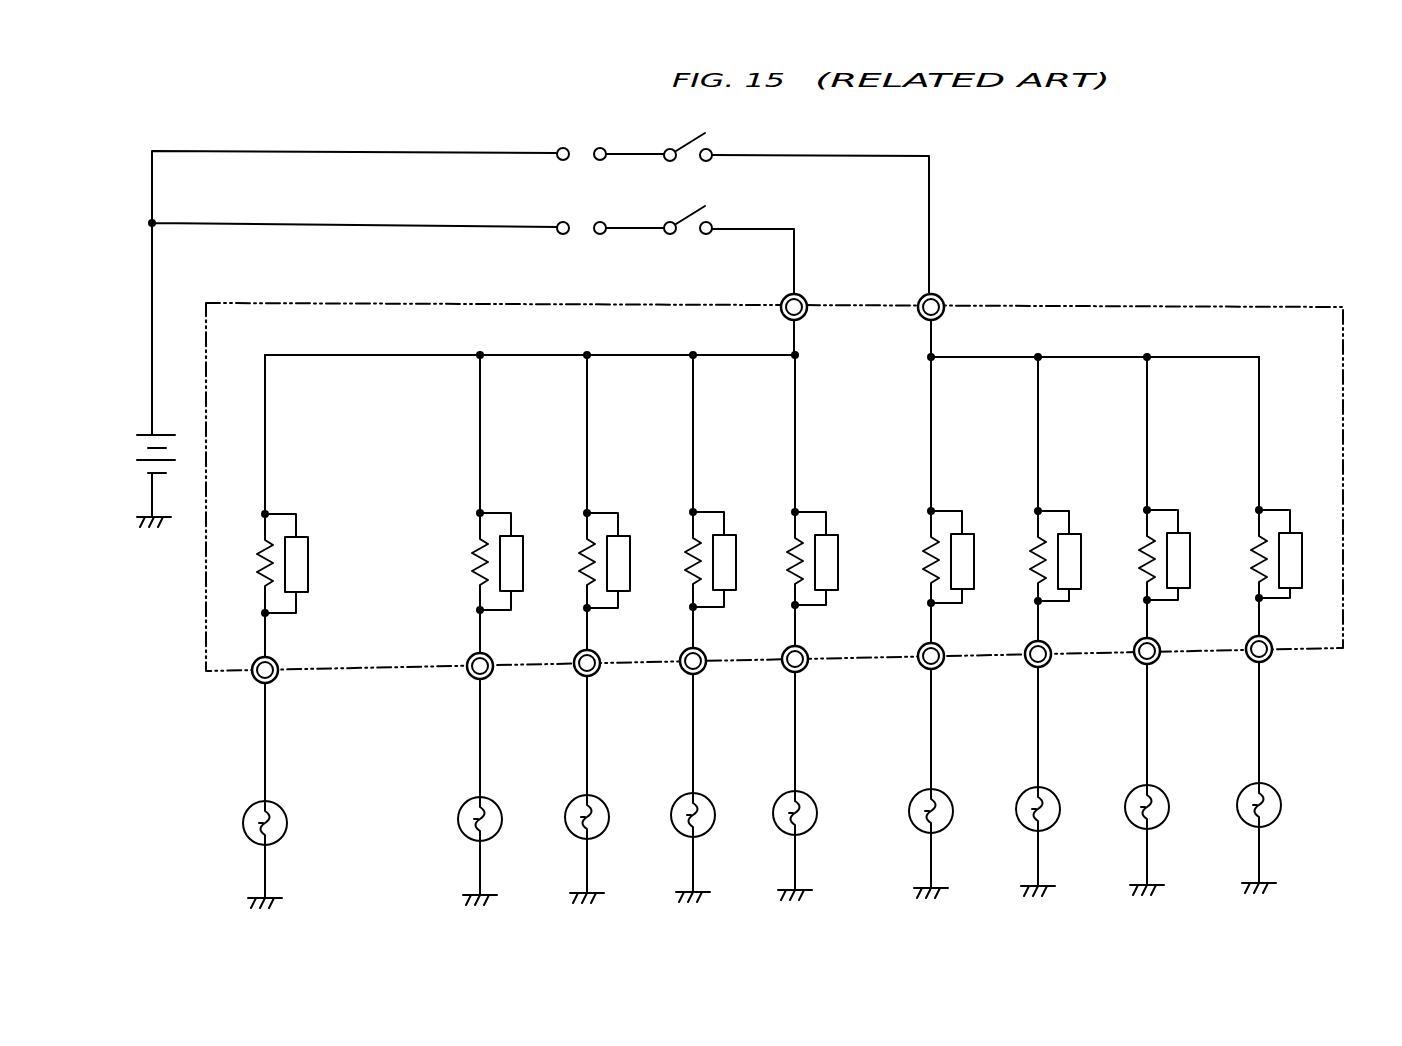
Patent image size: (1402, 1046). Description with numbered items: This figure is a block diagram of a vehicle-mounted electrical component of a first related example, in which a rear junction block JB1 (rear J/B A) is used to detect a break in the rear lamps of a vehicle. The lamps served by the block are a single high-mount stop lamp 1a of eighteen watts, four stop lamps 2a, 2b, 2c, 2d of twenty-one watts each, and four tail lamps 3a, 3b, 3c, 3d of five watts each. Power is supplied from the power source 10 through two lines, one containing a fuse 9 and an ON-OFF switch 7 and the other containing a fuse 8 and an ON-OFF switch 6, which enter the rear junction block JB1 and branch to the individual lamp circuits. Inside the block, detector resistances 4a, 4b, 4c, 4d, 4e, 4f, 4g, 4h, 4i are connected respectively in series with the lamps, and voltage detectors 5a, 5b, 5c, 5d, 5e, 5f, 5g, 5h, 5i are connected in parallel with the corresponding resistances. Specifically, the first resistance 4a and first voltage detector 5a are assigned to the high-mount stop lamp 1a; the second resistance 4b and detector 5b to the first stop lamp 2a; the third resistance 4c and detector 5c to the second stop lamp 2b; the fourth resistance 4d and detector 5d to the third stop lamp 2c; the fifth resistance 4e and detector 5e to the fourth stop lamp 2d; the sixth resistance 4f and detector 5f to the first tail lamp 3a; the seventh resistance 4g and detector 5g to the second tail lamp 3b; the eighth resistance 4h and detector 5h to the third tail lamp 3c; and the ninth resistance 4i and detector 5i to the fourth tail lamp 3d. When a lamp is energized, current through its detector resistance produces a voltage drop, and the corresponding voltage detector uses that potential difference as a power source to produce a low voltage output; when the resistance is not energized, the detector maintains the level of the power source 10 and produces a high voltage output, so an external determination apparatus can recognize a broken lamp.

The high-mount stop lamp 1a is at (255, 801).
The first stop lamp 2a is at (470, 797).
The second stop lamp 2b is at (577, 795).
The third stop lamp 2c is at (683, 793).
The fourth stop lamp 2d is at (785, 791).
The first tail lamp 3a is at (921, 789).
The second tail lamp 3b is at (1028, 787).
The third tail lamp 3c is at (1137, 785).
The fourth tail lamp 3d is at (1249, 783).
The first detector resistance 4a is at (258, 547).
The second detector resistance 4b is at (473, 546).
The third detector resistance 4c is at (580, 546).
The fourth detector resistance 4d is at (686, 545).
The fifth detector resistance 4e is at (788, 545).
The sixth detector resistance 4f is at (924, 544).
The seventh detector resistance 4g is at (1031, 544).
The eighth detector resistance 4h is at (1140, 543).
The ninth detector resistance 4i is at (1252, 543).
The first voltage detector 5a is at (299, 535).
The second voltage detector 5b is at (514, 534).
The third voltage detector 5c is at (621, 534).
The fourth voltage detector 5d is at (727, 533).
The fifth voltage detector 5e is at (829, 533).
The sixth voltage detector 5f is at (965, 532).
The seventh voltage detector 5g is at (1072, 532).
The eighth voltage detector 5h is at (1181, 531).
The ninth voltage detector 5i is at (1293, 531).
The ON-OFF switch 6 is at (687, 217).
The ON-OFF switch 7 is at (687, 140).
The fuse 8 is at (577, 227).
The fuse 9 is at (577, 154).
The power source 10 is at (145, 435).
The rear junction block JB1 is at (1118, 306).